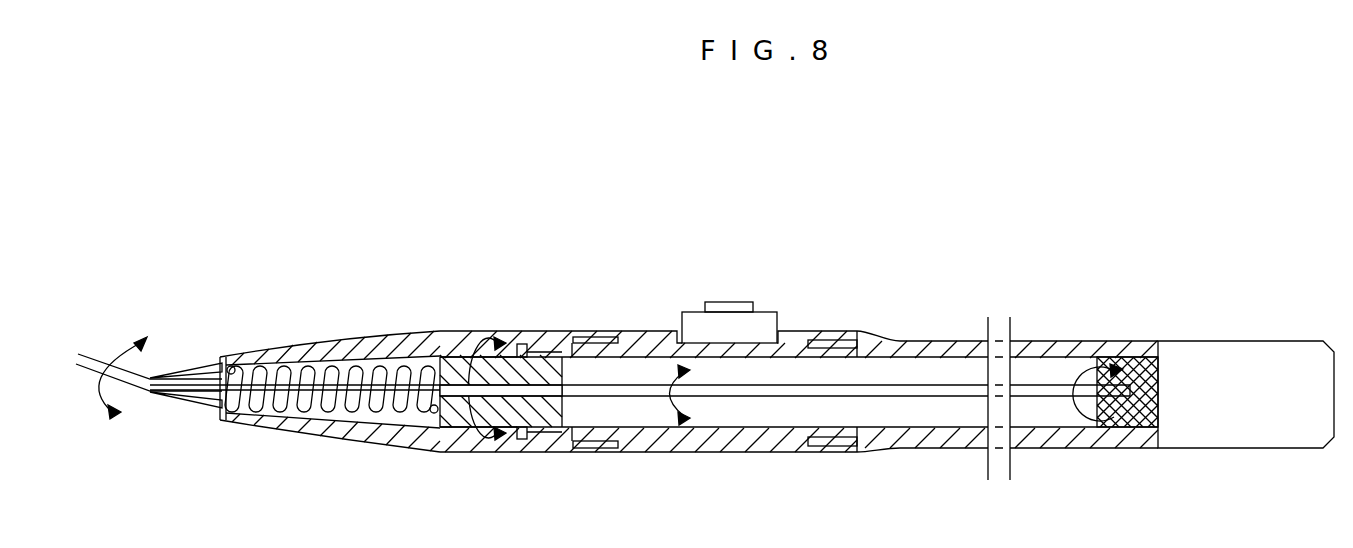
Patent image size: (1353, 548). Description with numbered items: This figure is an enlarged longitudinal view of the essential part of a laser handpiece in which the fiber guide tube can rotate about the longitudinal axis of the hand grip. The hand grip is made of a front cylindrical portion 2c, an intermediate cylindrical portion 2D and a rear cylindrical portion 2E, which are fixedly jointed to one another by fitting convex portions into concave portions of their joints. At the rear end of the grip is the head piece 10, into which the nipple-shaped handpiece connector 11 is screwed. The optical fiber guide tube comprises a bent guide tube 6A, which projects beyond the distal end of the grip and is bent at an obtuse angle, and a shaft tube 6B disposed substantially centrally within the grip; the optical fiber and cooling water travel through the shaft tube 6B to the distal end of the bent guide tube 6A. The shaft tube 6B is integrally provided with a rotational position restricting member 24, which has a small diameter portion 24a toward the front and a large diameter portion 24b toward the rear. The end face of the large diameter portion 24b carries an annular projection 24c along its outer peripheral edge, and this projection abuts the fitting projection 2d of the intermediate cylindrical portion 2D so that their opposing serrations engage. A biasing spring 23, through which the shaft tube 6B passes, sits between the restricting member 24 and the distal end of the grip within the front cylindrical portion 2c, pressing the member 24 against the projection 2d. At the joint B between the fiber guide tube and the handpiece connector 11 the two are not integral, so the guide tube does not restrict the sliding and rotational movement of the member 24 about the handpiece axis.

The bent guide tube 6A is at (136, 392).
The biasing spring 23 is at (307, 408).
The front cylindrical portion 2c is at (415, 437).
The rotational position restricting member 24 is at (543, 428).
The small diameter portion 24a is at (460, 362).
The large diameter portion 24b is at (550, 355).
The annular projection 24c is at (572, 350).
The fitting projection 2d is at (606, 432).
The intermediate cylindrical portion 2D is at (685, 445).
The shaft tube 6B is at (760, 394).
The rear cylindrical portion 2E is at (920, 437).
The joint B is at (1080, 375).
The handpiece connector 11 is at (1138, 360).
The head piece 10 is at (1245, 353).